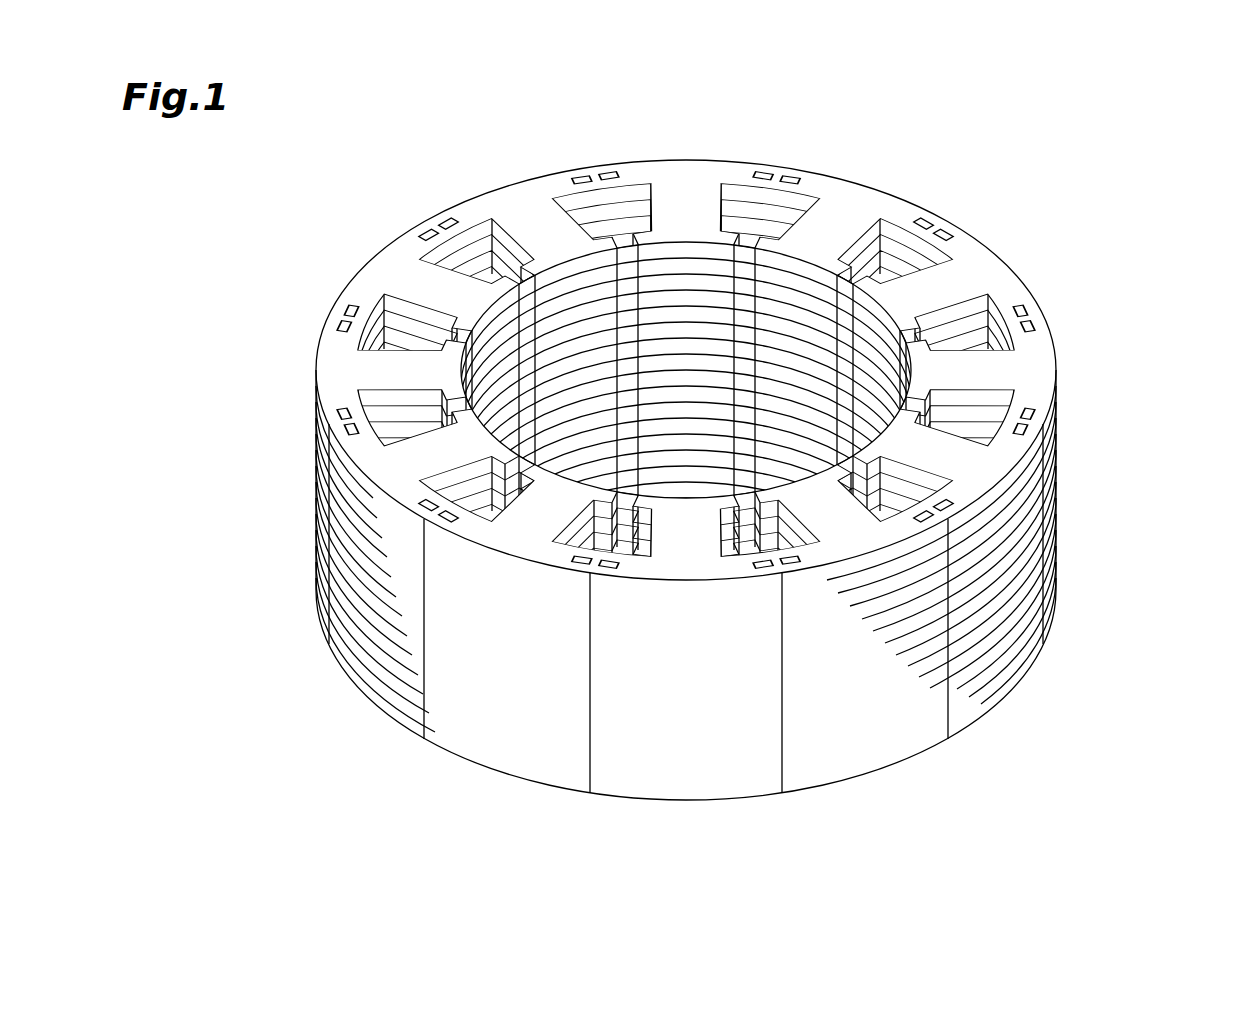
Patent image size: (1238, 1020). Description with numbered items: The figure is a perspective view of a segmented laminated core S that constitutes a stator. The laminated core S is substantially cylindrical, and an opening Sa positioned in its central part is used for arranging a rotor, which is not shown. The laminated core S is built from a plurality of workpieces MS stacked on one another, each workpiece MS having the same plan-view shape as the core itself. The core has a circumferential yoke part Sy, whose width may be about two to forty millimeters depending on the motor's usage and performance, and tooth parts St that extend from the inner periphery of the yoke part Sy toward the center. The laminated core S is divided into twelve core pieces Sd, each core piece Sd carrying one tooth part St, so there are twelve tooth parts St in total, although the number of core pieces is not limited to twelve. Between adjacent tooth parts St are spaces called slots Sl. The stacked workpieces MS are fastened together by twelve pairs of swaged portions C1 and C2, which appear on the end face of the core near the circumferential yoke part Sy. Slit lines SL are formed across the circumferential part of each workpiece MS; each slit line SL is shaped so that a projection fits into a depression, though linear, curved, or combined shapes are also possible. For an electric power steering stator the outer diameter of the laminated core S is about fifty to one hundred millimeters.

The segmented laminated core S is at (1131, 134).
The opening Sa is at (583, 305).
The tooth part St is at (668, 207).
The core piece Sd is at (707, 158).
The slot Sl is at (481, 238).
The yoke part Sy is at (838, 193).
The slit line SL is at (777, 174).
The swaged portion C1 is at (787, 178).
The swaged portion C2 is at (757, 175).
The workpiece MS is at (1040, 366).